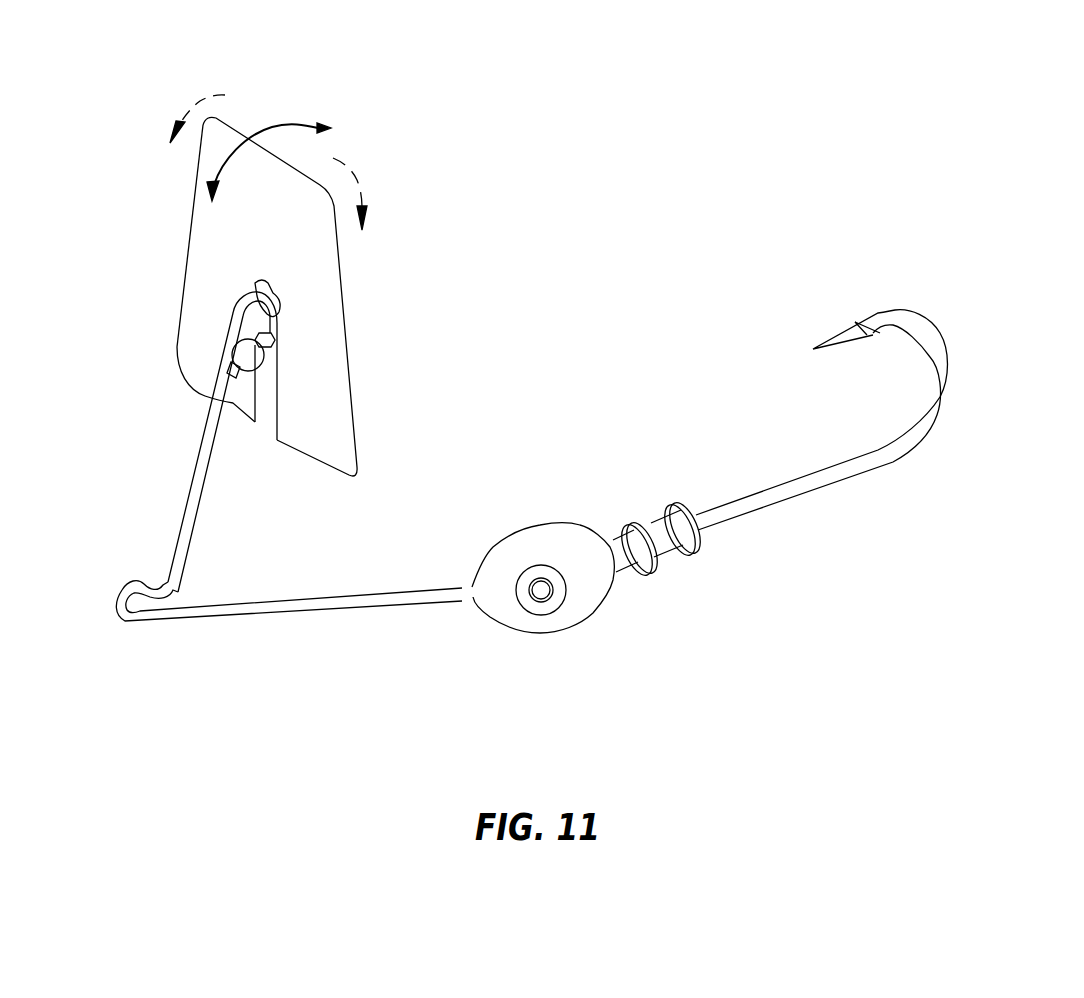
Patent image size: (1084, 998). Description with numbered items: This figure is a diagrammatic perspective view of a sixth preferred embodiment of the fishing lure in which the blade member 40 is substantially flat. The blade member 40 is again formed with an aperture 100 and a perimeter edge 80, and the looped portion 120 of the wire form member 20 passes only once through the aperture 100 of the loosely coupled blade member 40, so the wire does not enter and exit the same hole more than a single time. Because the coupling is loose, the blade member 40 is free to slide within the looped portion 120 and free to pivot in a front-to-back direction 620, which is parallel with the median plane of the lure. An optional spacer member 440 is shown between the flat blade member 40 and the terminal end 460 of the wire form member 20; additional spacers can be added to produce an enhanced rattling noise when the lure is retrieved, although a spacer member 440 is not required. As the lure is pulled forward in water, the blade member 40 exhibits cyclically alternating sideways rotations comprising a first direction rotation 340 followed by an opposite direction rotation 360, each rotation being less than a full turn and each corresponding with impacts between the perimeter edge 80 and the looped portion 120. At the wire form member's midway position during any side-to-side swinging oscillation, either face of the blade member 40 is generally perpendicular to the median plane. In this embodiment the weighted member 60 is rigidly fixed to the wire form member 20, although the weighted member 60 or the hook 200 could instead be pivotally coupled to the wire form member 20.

The wire form member 20 is at (283, 603).
The blade member 40 is at (193, 347).
The weighted member 60 is at (543, 537).
The perimeter edge 80 is at (197, 177).
The aperture 100 is at (273, 290).
The looped portion 120 is at (236, 311).
The hook 200 is at (723, 517).
The first direction rotation 340 is at (197, 100).
The opposite direction rotation 360 is at (360, 190).
The spacer member 440 is at (250, 357).
The terminal end 460 is at (232, 370).
The front-to-back direction 620 is at (280, 125).